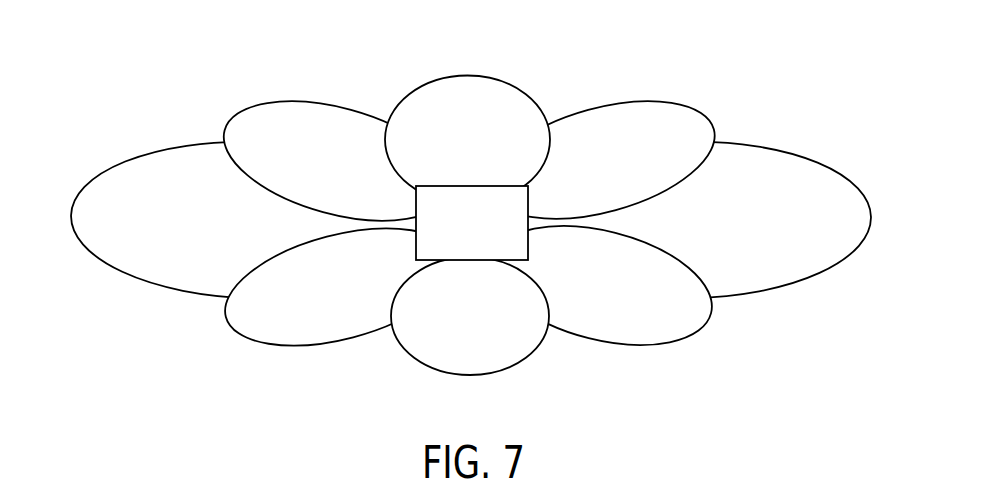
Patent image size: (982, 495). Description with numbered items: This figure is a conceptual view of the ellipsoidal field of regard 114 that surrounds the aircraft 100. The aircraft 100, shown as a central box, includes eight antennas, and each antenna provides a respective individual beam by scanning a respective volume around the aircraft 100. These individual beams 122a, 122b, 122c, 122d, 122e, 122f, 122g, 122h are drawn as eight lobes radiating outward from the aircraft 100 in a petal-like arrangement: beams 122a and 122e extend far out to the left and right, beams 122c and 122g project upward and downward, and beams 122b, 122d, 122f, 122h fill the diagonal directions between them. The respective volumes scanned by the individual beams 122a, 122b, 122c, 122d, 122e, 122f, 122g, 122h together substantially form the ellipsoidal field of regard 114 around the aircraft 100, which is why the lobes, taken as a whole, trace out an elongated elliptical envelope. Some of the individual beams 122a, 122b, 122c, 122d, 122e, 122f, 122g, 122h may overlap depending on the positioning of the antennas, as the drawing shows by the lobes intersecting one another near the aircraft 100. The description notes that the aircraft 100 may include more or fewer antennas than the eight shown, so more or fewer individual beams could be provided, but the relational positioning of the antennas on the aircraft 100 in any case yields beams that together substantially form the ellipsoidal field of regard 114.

The ellipsoidal field of regard 114 is at (221, 44).
The individual beam 122a is at (120, 168).
The individual beam 122b is at (237, 115).
The individual beam 122c is at (430, 82).
The individual beam 122d is at (697, 110).
The individual beam 122e is at (812, 158).
The individual beam 122f is at (697, 335).
The individual beam 122g is at (507, 369).
The individual beam 122h is at (252, 342).
The aircraft 100 is at (490, 246).